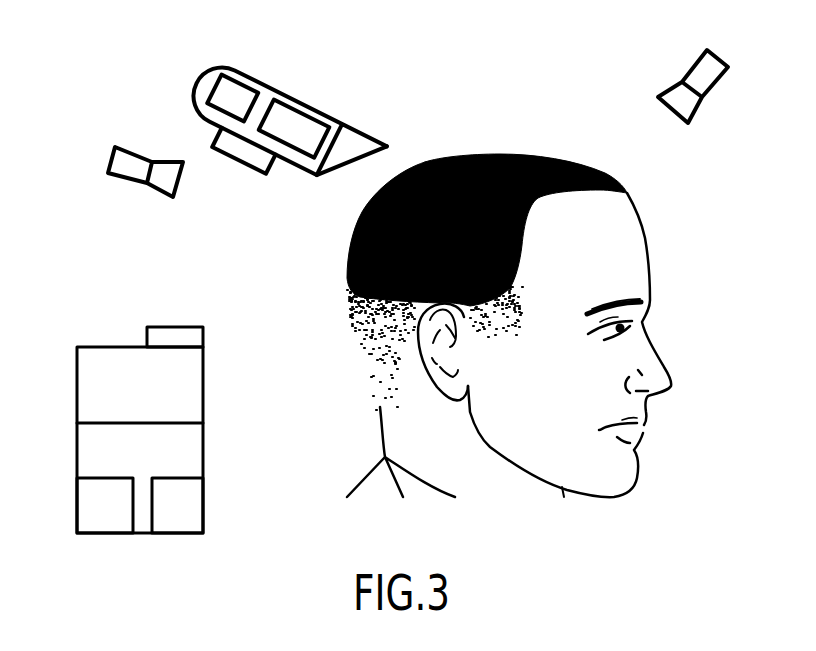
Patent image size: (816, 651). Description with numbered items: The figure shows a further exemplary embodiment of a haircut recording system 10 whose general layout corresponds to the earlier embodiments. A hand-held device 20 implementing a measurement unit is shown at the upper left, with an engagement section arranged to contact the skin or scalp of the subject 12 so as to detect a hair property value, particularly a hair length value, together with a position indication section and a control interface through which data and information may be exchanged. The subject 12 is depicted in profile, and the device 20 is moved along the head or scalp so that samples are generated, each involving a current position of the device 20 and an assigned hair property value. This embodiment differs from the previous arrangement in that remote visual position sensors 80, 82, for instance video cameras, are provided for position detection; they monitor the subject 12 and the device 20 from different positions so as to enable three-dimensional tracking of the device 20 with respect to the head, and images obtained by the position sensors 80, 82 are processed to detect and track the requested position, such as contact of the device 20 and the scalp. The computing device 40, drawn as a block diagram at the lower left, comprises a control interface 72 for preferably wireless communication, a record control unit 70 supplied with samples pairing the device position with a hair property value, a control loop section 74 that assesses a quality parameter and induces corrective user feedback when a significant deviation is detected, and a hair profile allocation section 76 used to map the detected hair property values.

The haircut recording system 10 is at (589, 88).
The subject 12 is at (648, 224).
The hand-held device 20 is at (190, 75).
The computing device 40 is at (92, 341).
The record control unit 70 is at (190, 450).
The control interface 72 is at (190, 338).
The control loop section 74 is at (93, 506).
The hair profile allocation section 76 is at (190, 506).
The remote visual position sensor 80 is at (120, 162).
The remote visual position sensor 82 is at (707, 78).